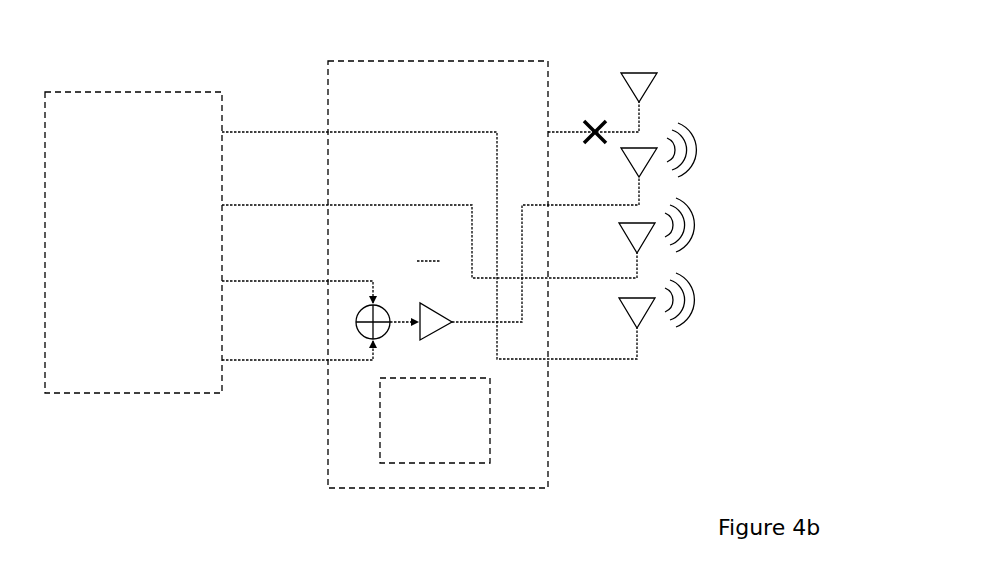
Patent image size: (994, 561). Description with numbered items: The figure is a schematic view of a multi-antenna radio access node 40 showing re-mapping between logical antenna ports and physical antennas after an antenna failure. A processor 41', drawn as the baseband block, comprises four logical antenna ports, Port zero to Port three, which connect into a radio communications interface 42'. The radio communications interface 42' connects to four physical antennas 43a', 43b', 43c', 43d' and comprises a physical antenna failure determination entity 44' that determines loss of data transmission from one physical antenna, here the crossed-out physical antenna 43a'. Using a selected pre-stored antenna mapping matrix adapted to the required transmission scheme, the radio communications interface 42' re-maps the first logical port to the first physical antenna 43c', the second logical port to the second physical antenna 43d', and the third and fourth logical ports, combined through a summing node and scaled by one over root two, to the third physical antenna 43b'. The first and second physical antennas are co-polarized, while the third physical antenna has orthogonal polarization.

The multi-antenna radio access node 40 is at (260, 53).
The processor 41' is at (133, 242).
The radio communications interface 42' is at (430, 257).
The physical antenna 43a' is at (673, 86).
The third physical antenna 43b' is at (695, 150).
The first physical antenna 43c' is at (690, 225).
The second physical antenna 43d' is at (692, 300).
The physical antenna failure determination entity 44' is at (435, 420).